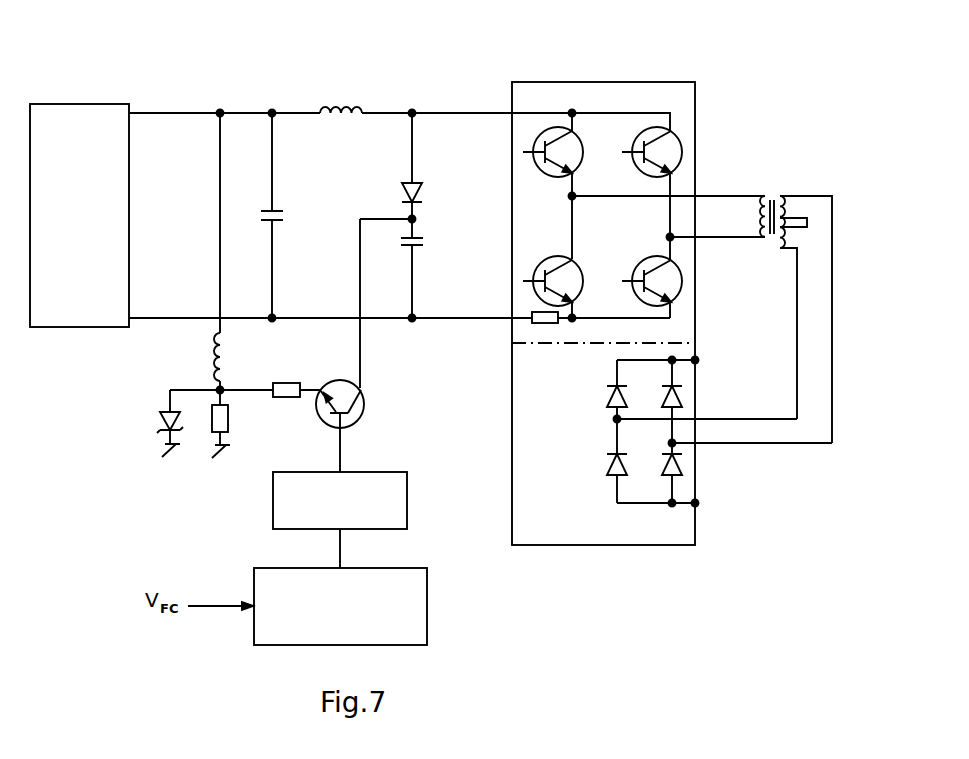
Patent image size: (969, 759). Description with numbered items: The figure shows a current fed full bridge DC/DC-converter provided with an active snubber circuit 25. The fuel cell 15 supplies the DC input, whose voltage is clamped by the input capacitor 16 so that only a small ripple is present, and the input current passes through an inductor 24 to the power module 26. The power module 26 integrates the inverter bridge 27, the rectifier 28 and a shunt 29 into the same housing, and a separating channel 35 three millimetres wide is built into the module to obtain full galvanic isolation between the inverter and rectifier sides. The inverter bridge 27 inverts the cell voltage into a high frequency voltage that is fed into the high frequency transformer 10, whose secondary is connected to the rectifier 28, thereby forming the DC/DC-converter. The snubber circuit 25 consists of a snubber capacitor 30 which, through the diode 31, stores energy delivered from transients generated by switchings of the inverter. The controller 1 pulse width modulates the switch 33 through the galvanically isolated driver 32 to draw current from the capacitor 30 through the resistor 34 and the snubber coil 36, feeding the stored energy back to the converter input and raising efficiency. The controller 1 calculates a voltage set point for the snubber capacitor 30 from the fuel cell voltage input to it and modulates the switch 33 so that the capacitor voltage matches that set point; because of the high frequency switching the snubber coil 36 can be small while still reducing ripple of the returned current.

The controller 1 is at (428, 603).
The high frequency transformer 10 is at (777, 183).
The fuel cell 15 is at (80, 328).
The input capacitor 16 is at (277, 208).
The inductor 24 is at (345, 103).
The active snubber circuit 25 is at (170, 493).
The power module 26 is at (608, 82).
The inverter bridge 27 is at (687, 106).
The rectifier 28 is at (711, 462).
The shunt 29 is at (532, 323).
The snubber capacitor 30 is at (419, 245).
The diode 31 is at (419, 195).
The galvanically isolated driver 32 is at (408, 503).
The switch 33 is at (364, 408).
The resistor 34 is at (284, 382).
The separating channel 35 is at (549, 343).
The snubber coil 36 is at (214, 356).